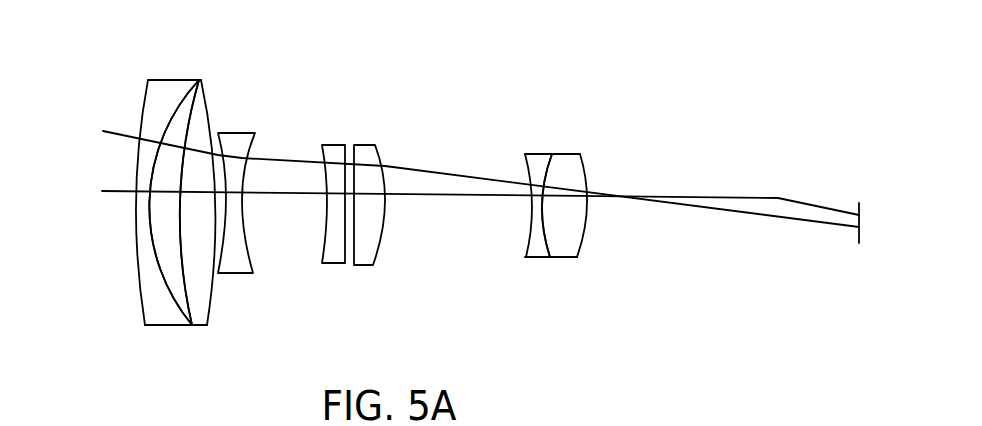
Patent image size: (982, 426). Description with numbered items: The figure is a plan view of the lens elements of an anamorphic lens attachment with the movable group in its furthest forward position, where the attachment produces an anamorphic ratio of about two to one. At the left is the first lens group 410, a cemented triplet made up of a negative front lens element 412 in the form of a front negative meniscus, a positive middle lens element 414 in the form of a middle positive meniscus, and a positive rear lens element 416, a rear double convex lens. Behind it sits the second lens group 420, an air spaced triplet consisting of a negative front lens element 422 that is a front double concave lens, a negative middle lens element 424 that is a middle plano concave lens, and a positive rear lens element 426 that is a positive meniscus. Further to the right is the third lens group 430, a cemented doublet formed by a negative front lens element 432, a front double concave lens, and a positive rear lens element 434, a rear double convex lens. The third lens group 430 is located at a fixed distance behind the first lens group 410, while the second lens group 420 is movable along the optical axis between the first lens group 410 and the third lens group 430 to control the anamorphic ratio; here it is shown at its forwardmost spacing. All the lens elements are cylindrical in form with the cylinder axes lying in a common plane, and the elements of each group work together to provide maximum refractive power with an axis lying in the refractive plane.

The first lens group 410 is at (135, 75).
The negative front lens element 412 is at (143, 283).
The positive middle lens element 414 is at (152, 209).
The positive rear lens element 416 is at (197, 308).
The second lens group 420 is at (218, 128).
The negative front lens element 422 is at (230, 275).
The negative middle lens element 424 is at (327, 265).
The positive rear lens element 426 is at (375, 258).
The third lens group 430 is at (585, 152).
The negative front lens element 432 is at (533, 258).
The positive rear lens element 434 is at (570, 258).